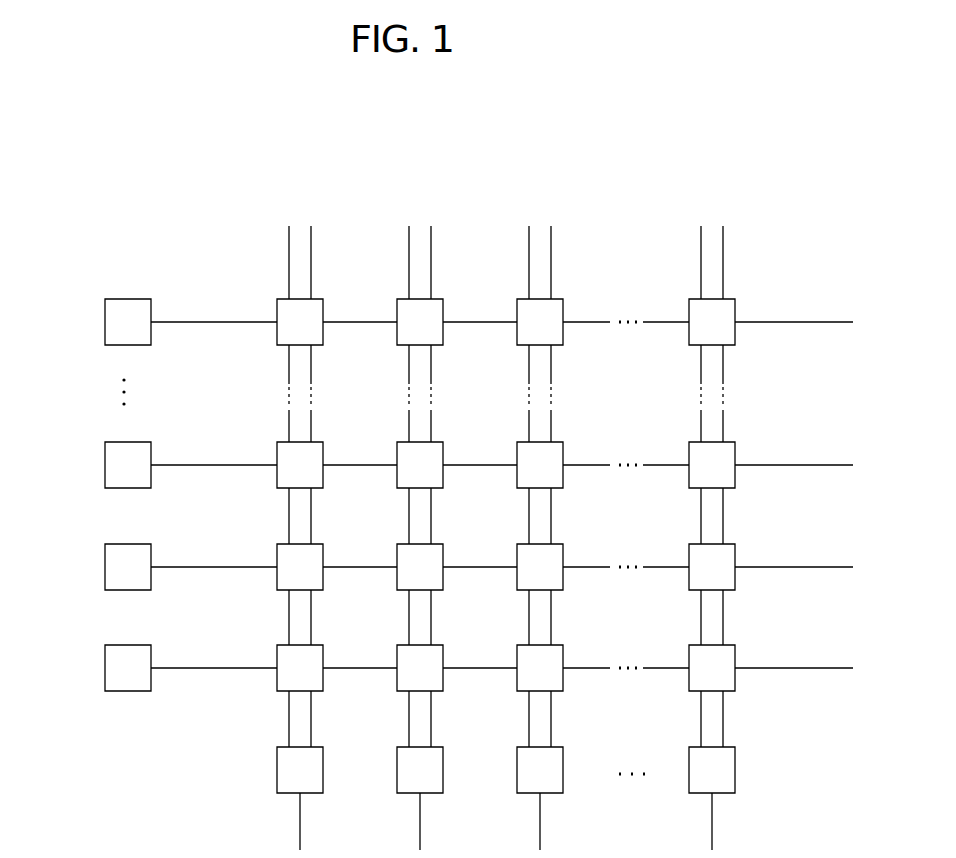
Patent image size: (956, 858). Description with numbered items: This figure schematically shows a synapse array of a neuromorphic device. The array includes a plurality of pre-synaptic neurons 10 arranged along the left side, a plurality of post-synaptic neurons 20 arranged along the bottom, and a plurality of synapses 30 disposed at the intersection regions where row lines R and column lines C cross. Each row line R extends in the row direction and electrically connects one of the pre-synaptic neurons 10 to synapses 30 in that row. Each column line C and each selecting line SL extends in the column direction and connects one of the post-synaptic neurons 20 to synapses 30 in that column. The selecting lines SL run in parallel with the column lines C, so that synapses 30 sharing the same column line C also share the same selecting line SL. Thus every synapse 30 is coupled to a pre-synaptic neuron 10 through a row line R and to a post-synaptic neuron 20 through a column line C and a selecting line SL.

The pre-synaptic neuron 10 is at (97, 489).
The post-synaptic neuron 20 is at (531, 785).
The synapse 30 is at (531, 482).
The column line C is at (475, 485).
The selecting line SL is at (544, 486).
The row line R is at (834, 314).